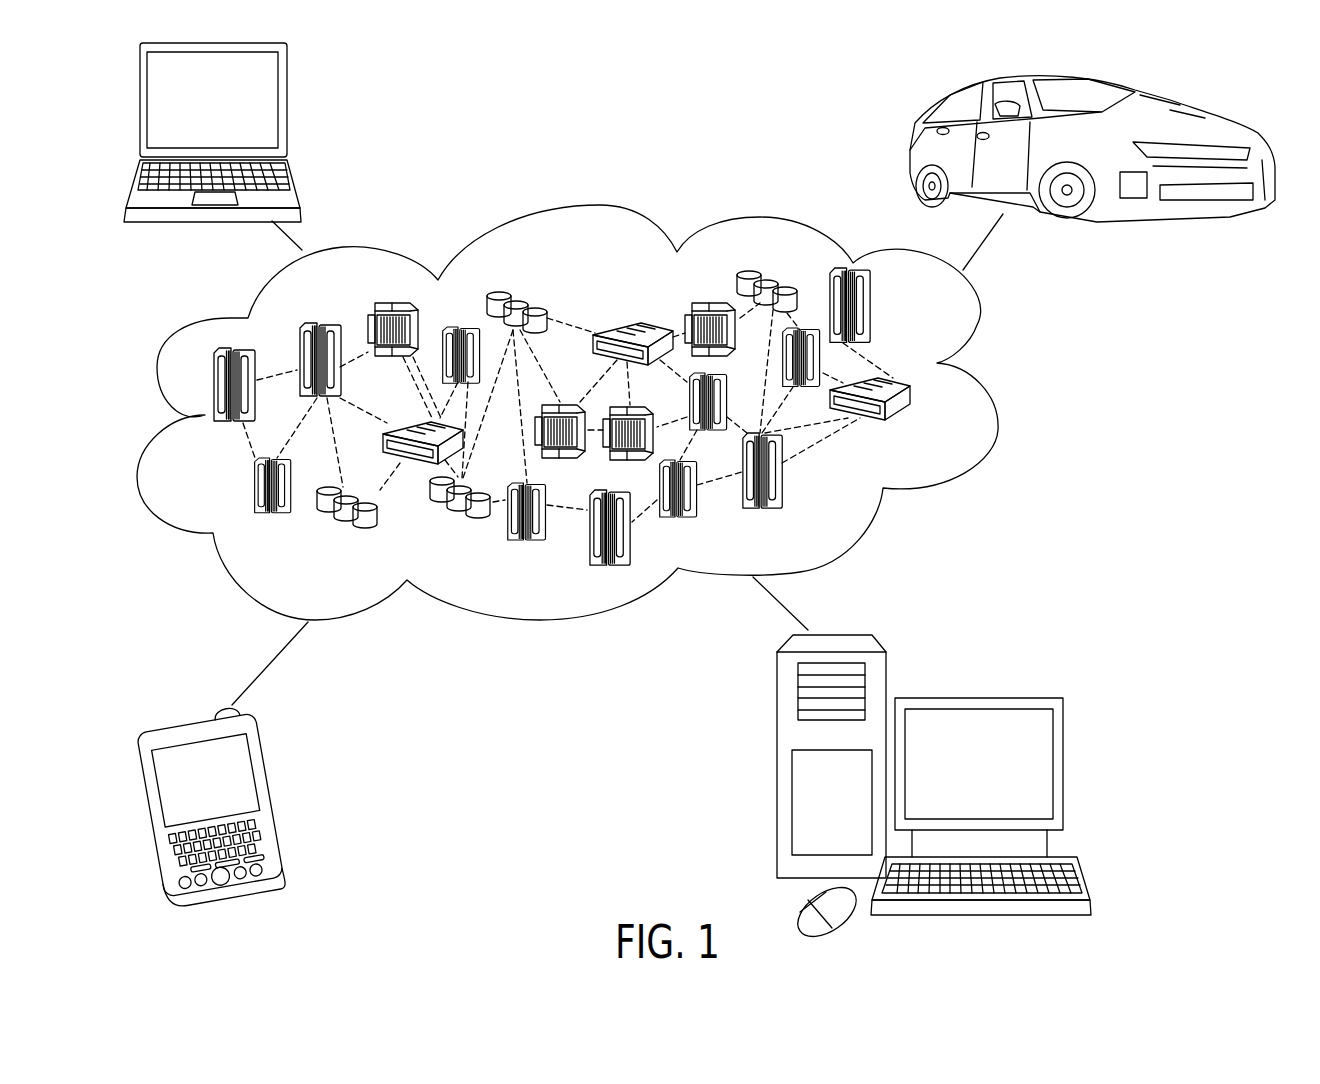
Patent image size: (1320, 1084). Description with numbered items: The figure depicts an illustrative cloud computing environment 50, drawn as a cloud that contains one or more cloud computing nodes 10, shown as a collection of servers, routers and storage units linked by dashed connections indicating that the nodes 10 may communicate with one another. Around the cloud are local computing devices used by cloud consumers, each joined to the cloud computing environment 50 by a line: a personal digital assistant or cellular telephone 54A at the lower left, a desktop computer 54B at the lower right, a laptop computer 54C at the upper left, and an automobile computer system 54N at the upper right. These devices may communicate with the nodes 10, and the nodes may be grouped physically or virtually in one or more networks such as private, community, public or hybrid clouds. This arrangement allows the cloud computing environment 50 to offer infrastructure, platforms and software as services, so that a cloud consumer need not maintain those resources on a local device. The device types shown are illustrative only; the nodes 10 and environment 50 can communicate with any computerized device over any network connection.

The cloud computing nodes 10 is at (935, 428).
The cloud computing environment 50 is at (995, 407).
The personal digital assistant (PDA) or cellular telephone 54A is at (272, 789).
The desktop computer 54B is at (1018, 697).
The laptop computer 54C is at (288, 123).
The automobile computer system 54N is at (1163, 100).